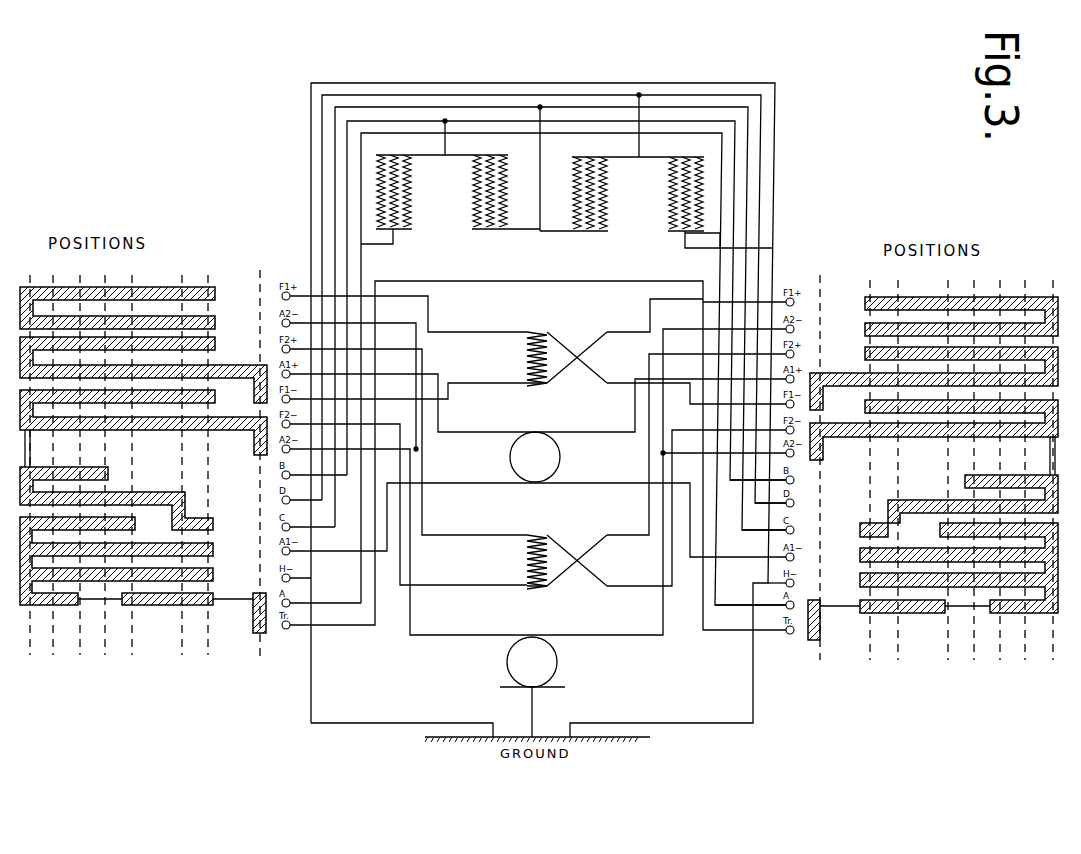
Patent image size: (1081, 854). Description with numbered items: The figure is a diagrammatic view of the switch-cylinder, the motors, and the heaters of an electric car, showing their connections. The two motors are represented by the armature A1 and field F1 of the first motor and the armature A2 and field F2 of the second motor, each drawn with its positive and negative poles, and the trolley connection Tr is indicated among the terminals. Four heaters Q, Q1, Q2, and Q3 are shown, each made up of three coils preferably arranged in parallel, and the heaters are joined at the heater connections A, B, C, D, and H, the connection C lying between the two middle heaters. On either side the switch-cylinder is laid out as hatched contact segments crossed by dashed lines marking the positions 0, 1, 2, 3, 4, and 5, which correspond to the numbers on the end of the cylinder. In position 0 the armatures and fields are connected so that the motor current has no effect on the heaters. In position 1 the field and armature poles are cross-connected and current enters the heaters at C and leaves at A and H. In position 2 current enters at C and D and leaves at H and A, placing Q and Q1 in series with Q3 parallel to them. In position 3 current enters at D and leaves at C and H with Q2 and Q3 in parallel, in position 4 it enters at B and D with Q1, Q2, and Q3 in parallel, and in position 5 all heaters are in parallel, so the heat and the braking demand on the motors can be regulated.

The heater Q is at (394, 192).
The heater Q1 is at (480, 192).
The heater Q2 is at (596, 194).
The heater Q3 is at (676, 194).
The heater connection A is at (382, 239).
The heater connection B is at (442, 145).
The heater connection C is at (540, 177).
The heater connection D is at (637, 133).
The heater connection H is at (729, 239).
The trolley connection Tr is at (538, 447).
The field of first motor F1 is at (538, 350).
The field of second motor F2 is at (538, 474).
The armature of first motor A1 is at (538, 465).
The armature of second motor A2 is at (538, 530).
The switch position 0 is at (539, 460).
The switch position 1 is at (538, 460).
The switch position 2 is at (538, 460).
The switch position 3 is at (539, 460).
The switch position 4 is at (538, 460).
The switch position 5 is at (539, 460).